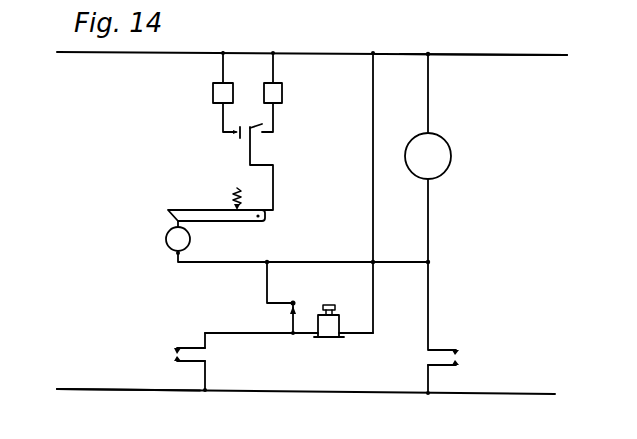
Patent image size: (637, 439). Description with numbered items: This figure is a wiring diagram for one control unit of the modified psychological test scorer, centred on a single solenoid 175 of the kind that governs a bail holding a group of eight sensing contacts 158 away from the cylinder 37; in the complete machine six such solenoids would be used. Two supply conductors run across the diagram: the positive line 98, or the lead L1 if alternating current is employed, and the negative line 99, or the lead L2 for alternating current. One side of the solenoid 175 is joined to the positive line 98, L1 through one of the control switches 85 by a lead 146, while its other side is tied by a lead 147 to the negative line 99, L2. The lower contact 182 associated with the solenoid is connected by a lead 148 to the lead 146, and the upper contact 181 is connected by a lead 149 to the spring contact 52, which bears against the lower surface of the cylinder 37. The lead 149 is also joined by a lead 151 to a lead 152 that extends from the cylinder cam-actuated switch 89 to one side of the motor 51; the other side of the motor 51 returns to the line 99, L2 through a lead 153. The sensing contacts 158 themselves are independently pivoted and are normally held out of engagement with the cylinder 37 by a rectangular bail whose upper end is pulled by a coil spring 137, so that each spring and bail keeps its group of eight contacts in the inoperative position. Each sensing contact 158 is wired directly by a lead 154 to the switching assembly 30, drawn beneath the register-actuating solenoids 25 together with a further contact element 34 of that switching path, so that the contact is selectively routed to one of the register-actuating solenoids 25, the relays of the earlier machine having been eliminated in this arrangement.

The register-actuating solenoid 25 is at (213, 93).
The switching assembly 30 is at (238, 136).
The relay contact 34 is at (263, 127).
The cylinder 37 is at (166, 236).
The motor 51 is at (452, 150).
The spring contact 52 is at (175, 256).
The control switch 85 is at (168, 352).
The cylinder cam-actuated switch 89 is at (462, 354).
The positive line 98 is at (78, 390).
The negative line 99 is at (470, 55).
The lead L1 is at (123, 390).
The lead L2 is at (519, 55).
The coil spring 137 is at (233, 198).
The lead 146 is at (223, 362).
The lead 147 is at (373, 199).
The lead 148 is at (304, 324).
The lead 149 is at (265, 285).
The lead 151 is at (302, 262).
The lead 152 is at (428, 282).
The lead 153 is at (428, 97).
The lead 154 is at (273, 175).
The sensing contact 158 is at (224, 222).
The solenoid 175 is at (333, 338).
The upper contact 181 is at (305, 284).
The lower contact 182 is at (290, 313).